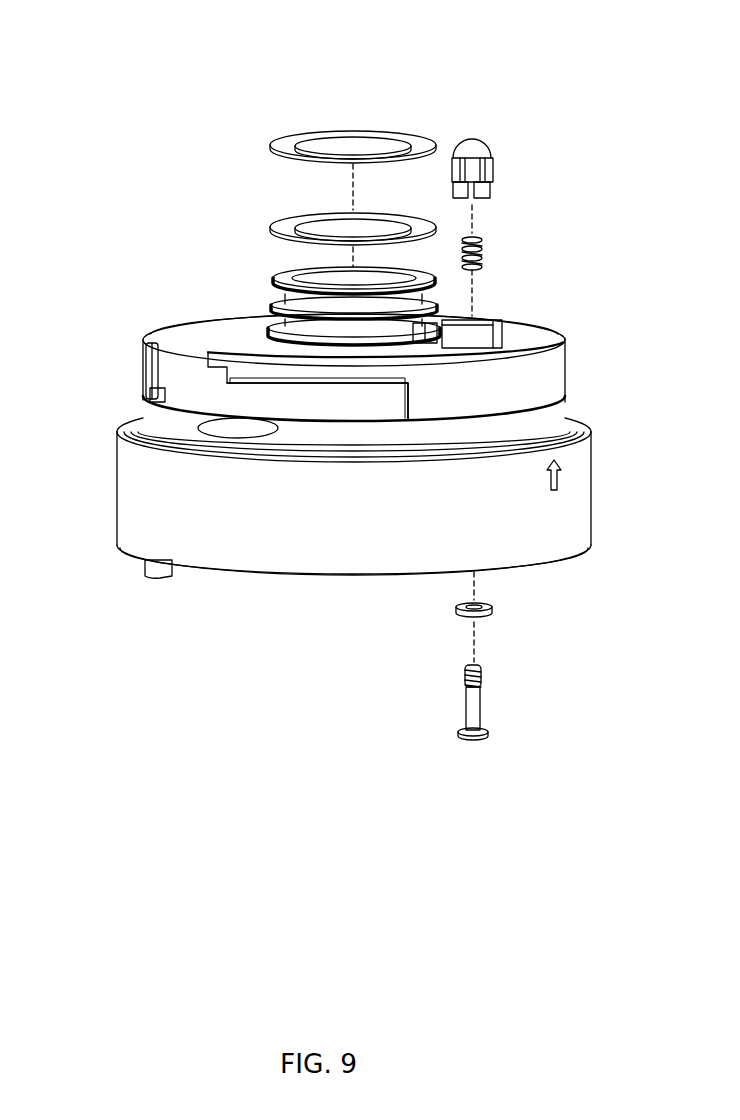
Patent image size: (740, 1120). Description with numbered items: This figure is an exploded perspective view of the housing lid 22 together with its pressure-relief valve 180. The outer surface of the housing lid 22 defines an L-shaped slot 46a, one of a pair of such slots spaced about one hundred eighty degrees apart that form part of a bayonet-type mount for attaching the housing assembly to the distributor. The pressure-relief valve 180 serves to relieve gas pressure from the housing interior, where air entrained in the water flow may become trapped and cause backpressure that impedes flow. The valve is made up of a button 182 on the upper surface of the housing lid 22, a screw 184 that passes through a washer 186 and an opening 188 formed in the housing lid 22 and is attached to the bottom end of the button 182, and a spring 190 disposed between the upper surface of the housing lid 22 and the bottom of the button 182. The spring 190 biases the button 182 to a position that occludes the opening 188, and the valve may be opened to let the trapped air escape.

The pressure-relief valve 180 is at (468, 107).
The button 182 is at (494, 146).
The spring 190 is at (486, 253).
The opening 188 is at (490, 318).
The L-shaped slot 46a is at (290, 395).
The housing lid 22 is at (117, 490).
The washer 186 is at (493, 606).
The screw 184 is at (488, 710).